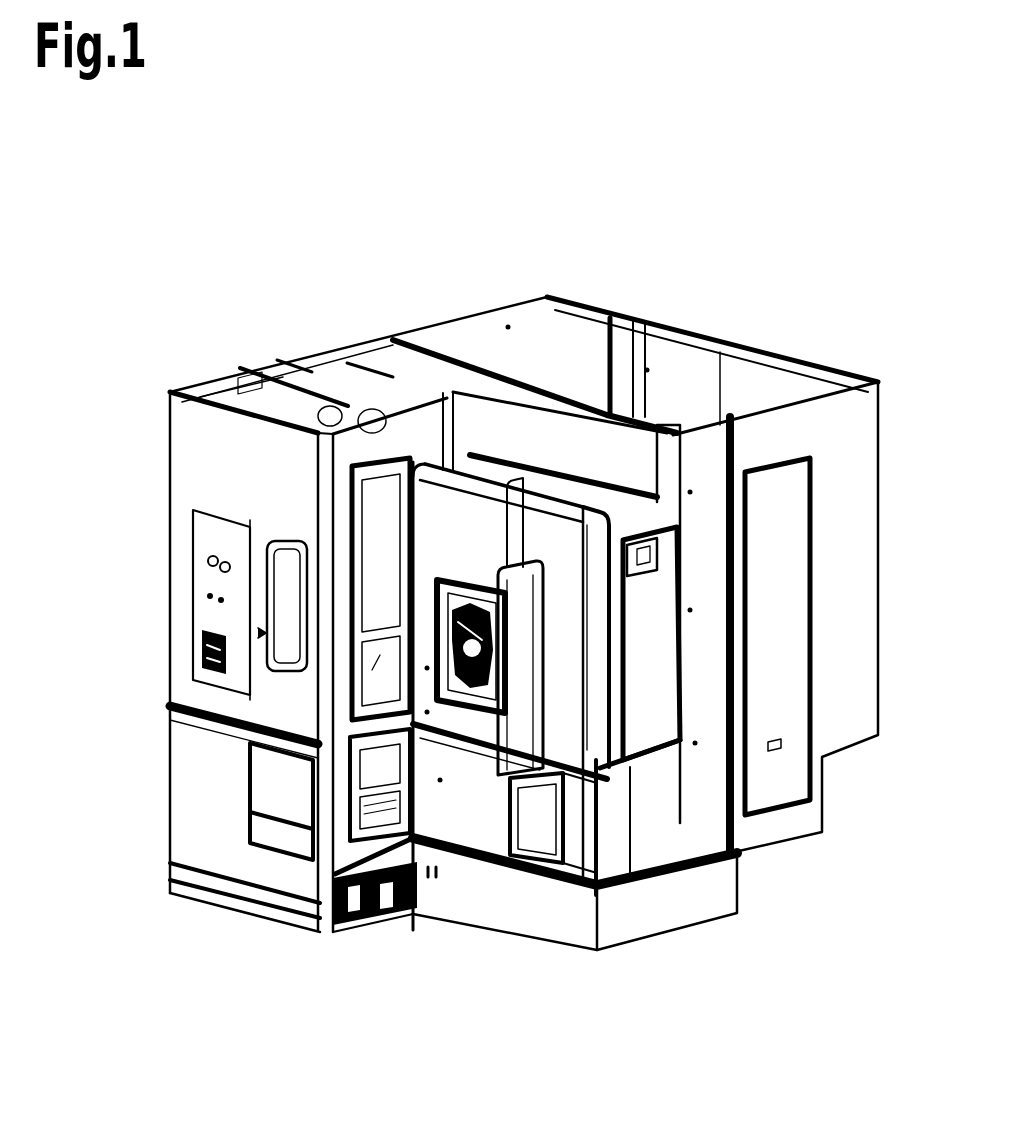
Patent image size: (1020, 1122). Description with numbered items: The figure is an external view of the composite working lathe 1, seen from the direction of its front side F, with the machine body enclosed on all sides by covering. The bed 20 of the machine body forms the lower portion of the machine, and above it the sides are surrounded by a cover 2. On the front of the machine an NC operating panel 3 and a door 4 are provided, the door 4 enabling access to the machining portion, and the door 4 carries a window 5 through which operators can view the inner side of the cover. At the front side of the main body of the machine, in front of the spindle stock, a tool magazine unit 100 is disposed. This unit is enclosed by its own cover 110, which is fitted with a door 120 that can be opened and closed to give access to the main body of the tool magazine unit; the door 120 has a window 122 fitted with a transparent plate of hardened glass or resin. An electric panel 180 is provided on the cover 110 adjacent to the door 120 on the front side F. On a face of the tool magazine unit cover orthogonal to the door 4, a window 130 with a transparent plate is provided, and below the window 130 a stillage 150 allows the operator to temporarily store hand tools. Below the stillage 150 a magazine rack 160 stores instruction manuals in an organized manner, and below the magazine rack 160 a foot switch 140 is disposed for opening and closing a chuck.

The composite working lathe 1 is at (730, 257).
The cover 2 is at (840, 520).
The NC operating panel 3 is at (512, 725).
The door 4 is at (453, 535).
The window 5 is at (482, 690).
The bed 20 is at (688, 902).
The tool magazine unit 100 is at (259, 305).
The cover 110 is at (190, 813).
The door 120 is at (277, 503).
The window 122 is at (293, 638).
The window 130 is at (385, 545).
The foot switch 140 is at (370, 914).
The stillage 150 is at (333, 735).
The magazine rack 160 is at (362, 830).
The electric panel 180 is at (213, 614).
The front side F is at (384, 1003).